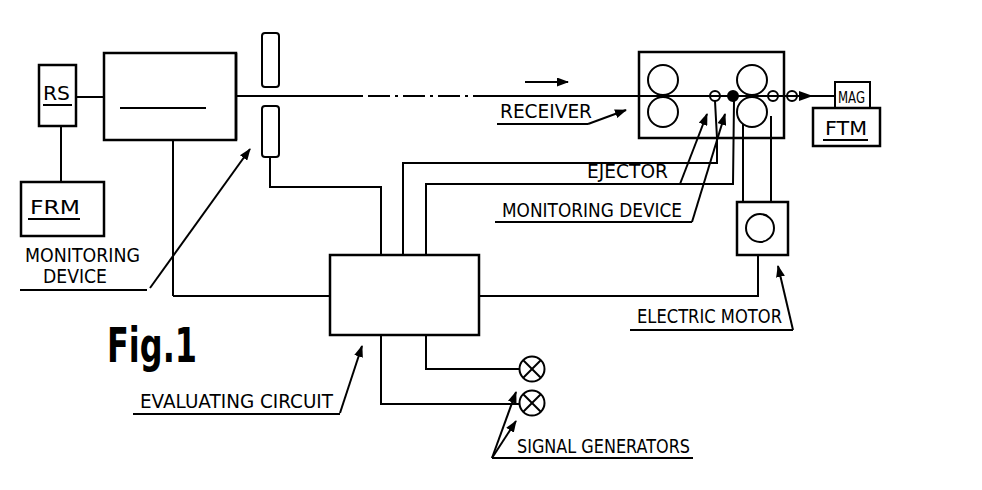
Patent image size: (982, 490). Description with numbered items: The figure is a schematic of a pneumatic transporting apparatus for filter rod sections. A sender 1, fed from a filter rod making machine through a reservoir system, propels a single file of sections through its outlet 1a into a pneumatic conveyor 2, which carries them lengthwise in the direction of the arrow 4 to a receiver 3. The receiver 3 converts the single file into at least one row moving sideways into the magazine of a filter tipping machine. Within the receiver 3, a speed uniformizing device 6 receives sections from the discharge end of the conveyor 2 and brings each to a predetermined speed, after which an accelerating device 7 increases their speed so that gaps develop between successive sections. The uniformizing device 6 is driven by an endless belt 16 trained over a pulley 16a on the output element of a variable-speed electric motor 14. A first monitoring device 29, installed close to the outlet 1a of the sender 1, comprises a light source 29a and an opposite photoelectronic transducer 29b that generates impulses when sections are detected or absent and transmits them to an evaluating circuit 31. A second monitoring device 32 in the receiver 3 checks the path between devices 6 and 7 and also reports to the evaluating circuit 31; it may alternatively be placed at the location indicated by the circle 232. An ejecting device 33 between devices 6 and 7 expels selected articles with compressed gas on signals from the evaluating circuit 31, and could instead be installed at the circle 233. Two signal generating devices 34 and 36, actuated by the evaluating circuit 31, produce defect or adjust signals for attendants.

The sender 1 is at (133, 137).
The outlet of the sender 1a is at (229, 94).
The pneumatic conveyor 2 is at (346, 94).
The receiver 3 is at (632, 131).
The arrow 4 is at (538, 82).
The speed uniformizing device 6 is at (657, 59).
The accelerating device 7 is at (757, 58).
The prime mover 14 is at (737, 243).
The endless belt 16 is at (773, 172).
The pulley 16a is at (775, 228).
The first monitoring device 29 is at (279, 81).
The source of light 29a is at (279, 71).
The photoelectronic transducer 29b is at (279, 123).
The evaluating circuit 31 is at (413, 311).
The second monitoring device 32 is at (735, 90).
The ejecting device 33 is at (714, 90).
The signal generating device 34 is at (545, 371).
The signal generating device 36 is at (545, 405).
The circle 232 is at (776, 91).
The circle 233 is at (796, 92).